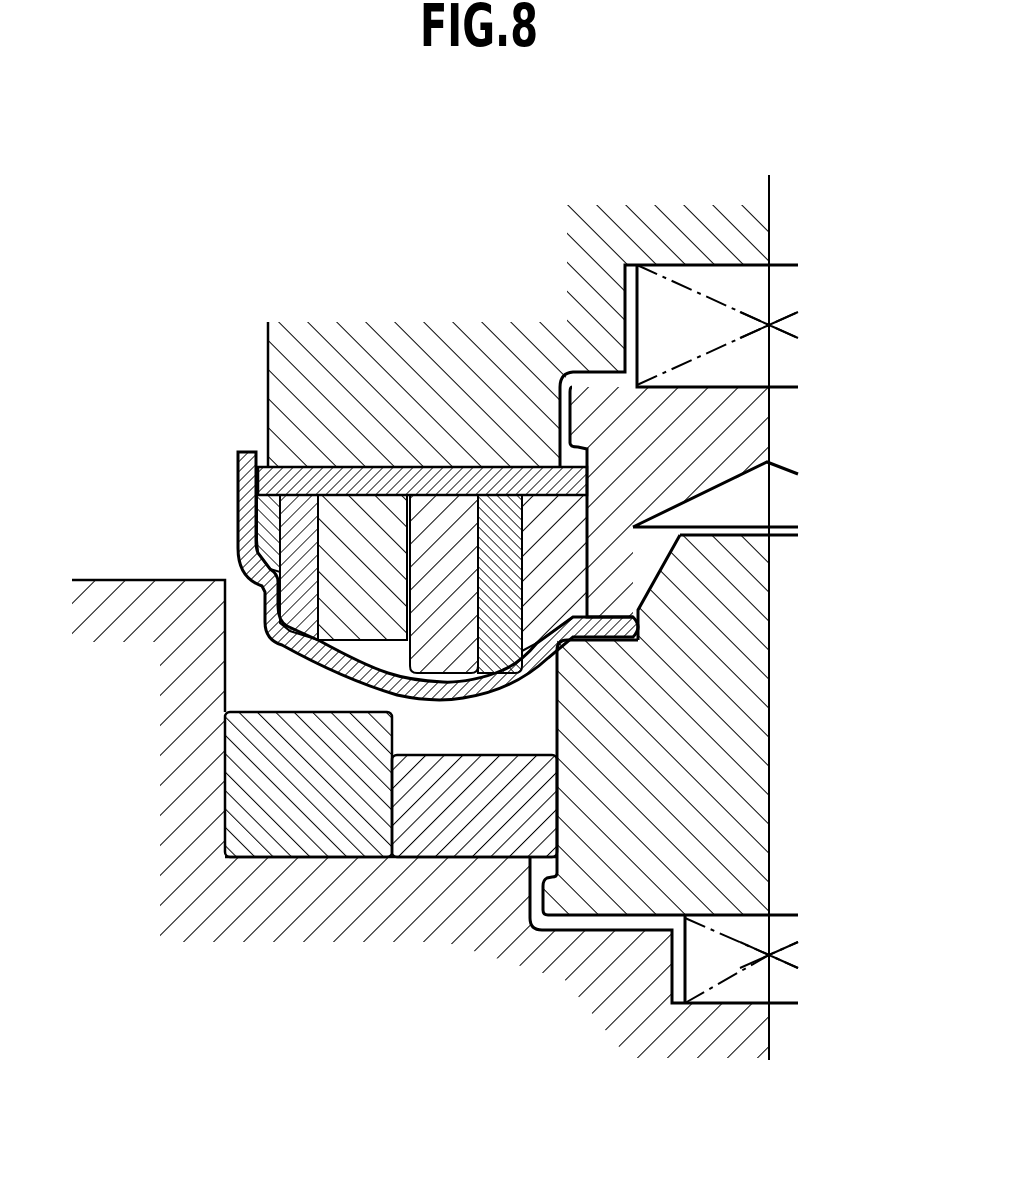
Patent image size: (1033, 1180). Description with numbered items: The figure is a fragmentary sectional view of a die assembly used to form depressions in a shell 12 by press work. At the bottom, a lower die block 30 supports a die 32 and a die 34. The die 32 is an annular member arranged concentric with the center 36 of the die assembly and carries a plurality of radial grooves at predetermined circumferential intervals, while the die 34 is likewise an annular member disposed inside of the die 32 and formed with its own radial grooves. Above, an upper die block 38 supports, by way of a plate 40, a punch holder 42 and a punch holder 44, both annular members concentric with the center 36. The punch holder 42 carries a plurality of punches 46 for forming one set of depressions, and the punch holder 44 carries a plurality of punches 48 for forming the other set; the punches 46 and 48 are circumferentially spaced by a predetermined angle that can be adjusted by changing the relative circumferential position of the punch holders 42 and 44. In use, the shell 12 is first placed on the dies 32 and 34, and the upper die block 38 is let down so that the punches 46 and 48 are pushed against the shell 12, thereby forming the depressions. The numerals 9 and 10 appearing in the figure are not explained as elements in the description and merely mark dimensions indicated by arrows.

The center of the die assembly 36 is at (772, 212).
The upper die block 38 is at (295, 352).
The plate 40 is at (268, 435).
The punch holder 42 is at (327, 533).
The punch holder 44 is at (543, 505).
The punches 46 is at (286, 624).
The punches 48 is at (506, 664).
The clearance dimension 9 is at (445, 684).
The gap dimension 10 is at (362, 646).
The shell 12 is at (640, 636).
The lower die block 30 is at (120, 578).
The die 32 is at (298, 842).
The die 34 is at (432, 842).